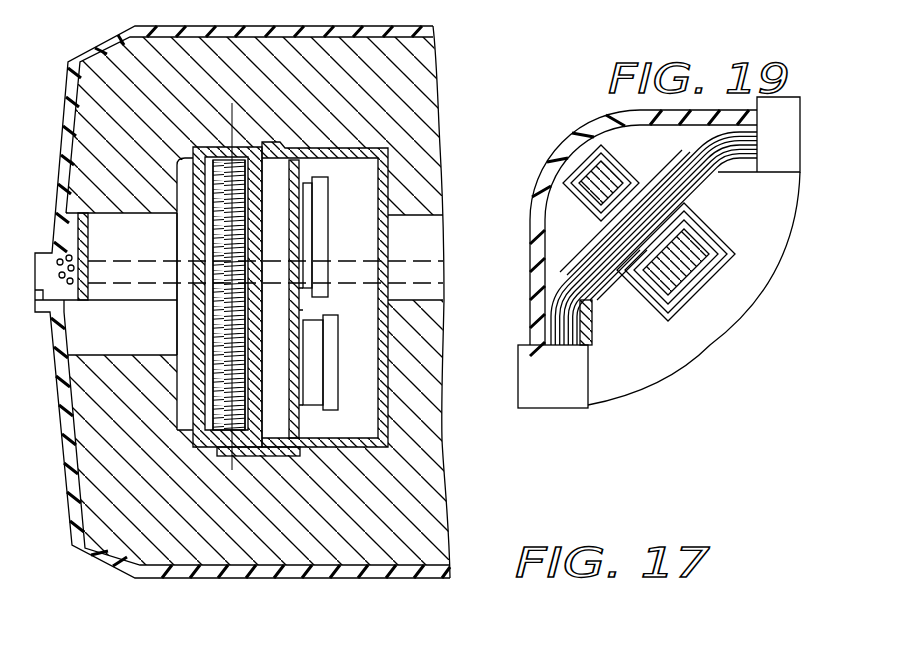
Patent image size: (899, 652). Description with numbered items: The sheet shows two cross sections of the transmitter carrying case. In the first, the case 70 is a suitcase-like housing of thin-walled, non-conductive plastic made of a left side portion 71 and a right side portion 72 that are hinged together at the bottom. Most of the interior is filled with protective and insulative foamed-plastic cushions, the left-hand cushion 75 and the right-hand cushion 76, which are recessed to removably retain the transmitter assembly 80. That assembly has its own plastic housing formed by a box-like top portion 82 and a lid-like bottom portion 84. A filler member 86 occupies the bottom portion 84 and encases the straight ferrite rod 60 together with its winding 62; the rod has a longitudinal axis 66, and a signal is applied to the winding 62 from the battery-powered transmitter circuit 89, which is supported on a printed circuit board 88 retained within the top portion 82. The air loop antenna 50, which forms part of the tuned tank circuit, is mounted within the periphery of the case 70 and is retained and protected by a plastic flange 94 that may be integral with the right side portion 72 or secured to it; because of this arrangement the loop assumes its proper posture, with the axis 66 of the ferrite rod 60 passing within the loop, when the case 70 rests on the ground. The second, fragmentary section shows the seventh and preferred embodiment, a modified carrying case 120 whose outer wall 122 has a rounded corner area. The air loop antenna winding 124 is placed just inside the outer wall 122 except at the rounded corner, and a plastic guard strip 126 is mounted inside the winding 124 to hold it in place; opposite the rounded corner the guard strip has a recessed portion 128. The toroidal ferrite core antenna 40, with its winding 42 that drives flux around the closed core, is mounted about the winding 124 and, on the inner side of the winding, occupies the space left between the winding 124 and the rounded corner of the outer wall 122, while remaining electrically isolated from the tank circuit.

In FIG. 19, the ferrite core antenna 40 is at (590, 183).
In FIG. 19, the winding 42 is at (546, 240).
In FIG. 17, the air loop antenna 50 is at (70, 257).
In FIG. 17, the ferrite rod 60 is at (217, 313).
In FIG. 17, the winding 62 is at (220, 344).
In FIG. 17, the longitudinal axis 66 is at (232, 468).
In FIG. 17, the case 70 is at (63, 515).
In FIG. 17, the left side portion 71 is at (283, 578).
In FIG. 17, the right side portion 72 is at (423, 27).
In FIG. 17, the left-hand cushion 75 is at (108, 471).
In FIG. 17, the right-hand cushion 76 is at (97, 97).
In FIG. 17, the transmitter assembly 80 is at (300, 294).
In FIG. 17, the top portion 82 is at (321, 145).
In FIG. 17, the bottom portion 84 is at (196, 146).
In FIG. 17, the filler member 86 is at (257, 400).
In FIG. 17, the printed circuit board 88 is at (302, 309).
In FIG. 17, the transmitter circuit 89 is at (390, 165).
In FIG. 17, the plastic flange 94 is at (89, 235).
In FIG. 19, the modified carrying case 120 is at (642, 271).
In FIG. 19, the outer wall 122 is at (574, 140).
In FIG. 19, the air loop antenna winding 124 is at (690, 178).
In FIG. 19, the plastic guard strip 126 is at (606, 303).
In FIG. 19, the recessed portion 128 is at (690, 292).